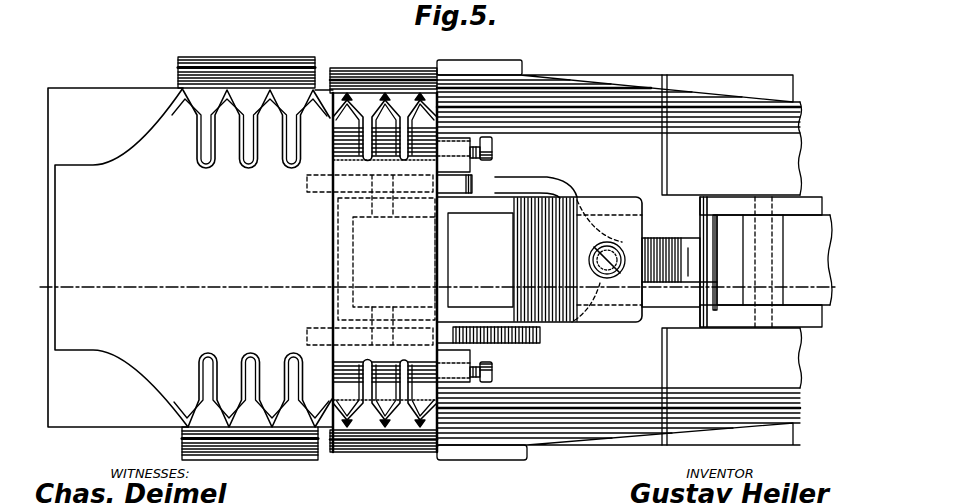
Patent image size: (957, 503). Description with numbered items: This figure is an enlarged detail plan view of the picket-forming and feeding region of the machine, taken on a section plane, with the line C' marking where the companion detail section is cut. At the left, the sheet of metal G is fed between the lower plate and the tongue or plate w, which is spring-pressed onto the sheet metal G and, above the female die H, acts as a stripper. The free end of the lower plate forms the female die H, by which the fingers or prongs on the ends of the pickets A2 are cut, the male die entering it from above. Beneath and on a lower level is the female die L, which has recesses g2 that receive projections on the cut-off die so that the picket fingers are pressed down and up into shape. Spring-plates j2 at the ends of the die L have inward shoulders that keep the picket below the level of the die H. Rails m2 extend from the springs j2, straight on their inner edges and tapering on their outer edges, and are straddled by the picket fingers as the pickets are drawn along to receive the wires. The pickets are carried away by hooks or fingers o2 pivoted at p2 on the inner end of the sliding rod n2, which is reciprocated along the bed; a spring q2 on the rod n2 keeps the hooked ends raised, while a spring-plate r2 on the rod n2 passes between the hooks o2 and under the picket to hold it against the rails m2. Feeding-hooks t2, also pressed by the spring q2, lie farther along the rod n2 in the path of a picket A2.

The sheet of metal G is at (190, 258).
The tongue or plate w is at (198, 274).
The female die H is at (249, 357).
The spring-plates j2 is at (430, 455).
The female die L is at (383, 406).
The picket A2 is at (371, 247).
The pivot p2 is at (370, 326).
The hooks or fingers o2 is at (391, 260).
The spring-plate r2 is at (539, 249).
The spring q2 is at (577, 322).
The rails m2 is at (619, 260).
The sliding rod n2 is at (679, 262).
The recesses g2 is at (358, 460).
The feeding-hooks t2 is at (766, 262).
The section line C' is at (429, 284).